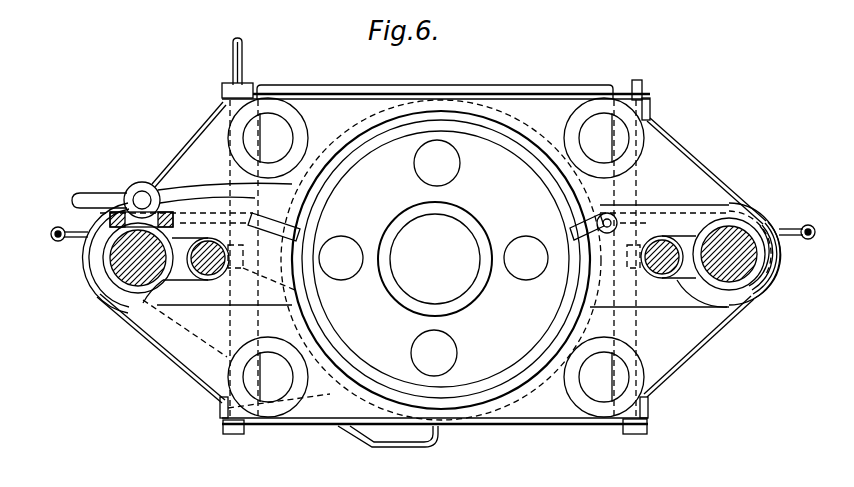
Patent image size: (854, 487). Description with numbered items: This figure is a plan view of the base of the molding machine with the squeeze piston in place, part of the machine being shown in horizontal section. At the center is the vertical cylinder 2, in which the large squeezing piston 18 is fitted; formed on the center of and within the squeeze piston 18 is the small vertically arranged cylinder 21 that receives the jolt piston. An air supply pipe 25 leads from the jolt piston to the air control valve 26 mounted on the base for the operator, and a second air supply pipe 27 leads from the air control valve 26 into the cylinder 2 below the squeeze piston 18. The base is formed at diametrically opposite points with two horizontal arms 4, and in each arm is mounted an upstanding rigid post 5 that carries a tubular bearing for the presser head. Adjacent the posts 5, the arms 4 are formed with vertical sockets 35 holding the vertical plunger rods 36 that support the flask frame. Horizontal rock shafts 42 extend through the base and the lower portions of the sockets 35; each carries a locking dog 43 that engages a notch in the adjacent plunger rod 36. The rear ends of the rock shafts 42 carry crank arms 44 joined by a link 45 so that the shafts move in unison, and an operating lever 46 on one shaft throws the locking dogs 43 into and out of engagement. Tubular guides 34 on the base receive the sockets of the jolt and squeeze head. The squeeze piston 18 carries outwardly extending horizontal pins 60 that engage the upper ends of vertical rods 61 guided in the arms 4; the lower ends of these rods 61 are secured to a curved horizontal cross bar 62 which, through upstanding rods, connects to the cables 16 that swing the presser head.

The vertical cylinder 2 is at (385, 115).
The horizontal extensions or arms 4 is at (108, 290).
The upstanding rigid post 5 is at (110, 267).
The cables 16 is at (68, 240).
The squeezing piston 18 is at (415, 142).
The small vertically arranged cylinder 21 is at (463, 300).
The air supply pipe 25 is at (188, 193).
The air control valve 26 is at (137, 185).
The air supply pipe 27 is at (397, 437).
The tubular guides 34 is at (270, 123).
The vertical sockets 35 is at (120, 315).
The vertical plunger rods 36 is at (193, 278).
The horizontal rock shafts 42 is at (642, 90).
The locking dog 43 is at (285, 279).
The crank arm 44 is at (232, 434).
The link 45 is at (497, 430).
The operating lever 46 is at (233, 60).
The horizontal pins 60 is at (297, 227).
The vertical rods 61 is at (613, 218).
The horizontal cross bar 62 is at (64, 229).